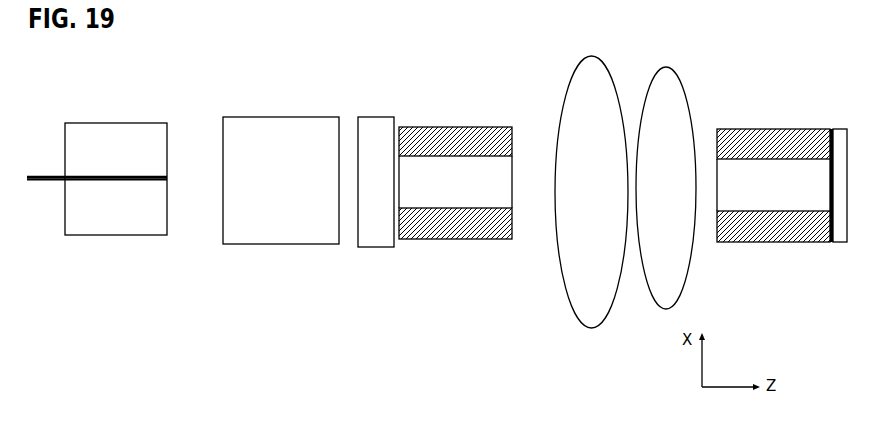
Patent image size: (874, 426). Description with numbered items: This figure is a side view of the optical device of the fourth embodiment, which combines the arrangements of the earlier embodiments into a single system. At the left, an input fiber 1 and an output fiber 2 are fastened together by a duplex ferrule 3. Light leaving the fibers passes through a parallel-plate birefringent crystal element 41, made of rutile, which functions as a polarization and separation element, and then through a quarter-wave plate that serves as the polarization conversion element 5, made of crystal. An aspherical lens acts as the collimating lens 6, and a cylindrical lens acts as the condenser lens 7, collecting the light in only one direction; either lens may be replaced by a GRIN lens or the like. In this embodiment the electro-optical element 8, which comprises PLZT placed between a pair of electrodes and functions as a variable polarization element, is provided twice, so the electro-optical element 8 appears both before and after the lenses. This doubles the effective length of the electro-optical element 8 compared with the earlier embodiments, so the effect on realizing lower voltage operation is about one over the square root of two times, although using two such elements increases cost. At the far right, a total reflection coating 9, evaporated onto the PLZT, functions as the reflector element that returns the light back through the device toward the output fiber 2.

The input fiber 1 is at (97, 162).
The output fiber 2 is at (97, 195).
The duplex ferrule 3 is at (116, 167).
The parallel-plate birefringent crystal element 41 is at (281, 168).
The polarization conversion element 5 is at (376, 198).
The collimating lens 6 is at (591, 179).
The condenser lens 7 is at (666, 173).
The electro-optical element 8 is at (614, 172).
The total reflection coating 9 is at (833, 204).